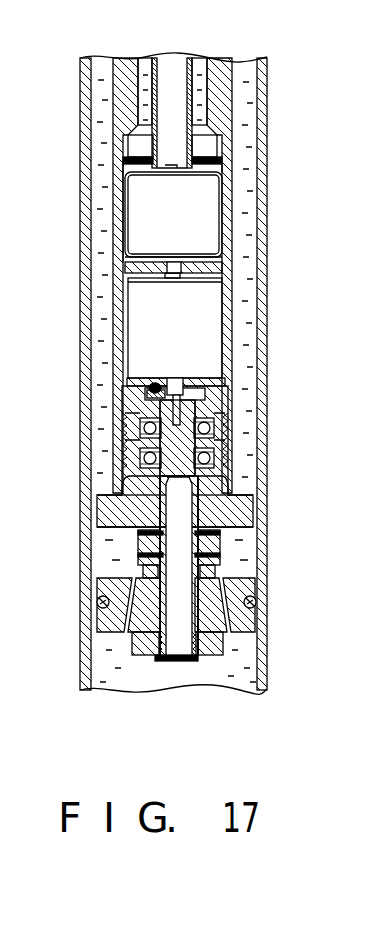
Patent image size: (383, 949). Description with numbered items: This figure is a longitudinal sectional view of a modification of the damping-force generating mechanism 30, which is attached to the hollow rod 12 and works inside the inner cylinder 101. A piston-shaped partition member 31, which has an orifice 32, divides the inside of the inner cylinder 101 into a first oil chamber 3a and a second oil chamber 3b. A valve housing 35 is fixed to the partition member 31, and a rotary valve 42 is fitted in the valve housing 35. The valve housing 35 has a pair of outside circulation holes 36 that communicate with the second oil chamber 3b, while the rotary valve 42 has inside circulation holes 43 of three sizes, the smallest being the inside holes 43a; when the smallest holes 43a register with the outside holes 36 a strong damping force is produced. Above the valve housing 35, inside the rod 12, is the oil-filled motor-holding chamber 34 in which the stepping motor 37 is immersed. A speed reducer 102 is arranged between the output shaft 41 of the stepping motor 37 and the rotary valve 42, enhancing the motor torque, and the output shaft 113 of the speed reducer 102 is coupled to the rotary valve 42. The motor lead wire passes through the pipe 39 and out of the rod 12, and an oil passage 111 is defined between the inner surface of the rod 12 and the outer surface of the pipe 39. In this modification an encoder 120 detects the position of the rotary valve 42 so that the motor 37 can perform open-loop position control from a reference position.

The inner cylinder 101 is at (83, 345).
The damping-force generating mechanism 30 is at (117, 672).
The first oil chamber 3a is at (247, 682).
The rod 12 is at (230, 105).
The pipe 39 is at (197, 72).
The oil passage 111 is at (198, 88).
The stepping motor 37 is at (203, 212).
The motor-holding chamber 34 is at (127, 237).
The output shaft 41 is at (218, 268).
The speed reducer 102 is at (210, 313).
The second oil chamber 3b is at (252, 462).
The encoder 120 is at (203, 397).
The output shaft 113 is at (180, 375).
The smallest inside circulation holes 43a is at (162, 522).
The rotary valve 42 is at (193, 493).
The valve housing 35 is at (235, 515).
The inside circulation holes 43 is at (185, 575).
The outside circulation holes 36 is at (213, 558).
The partition member 31 is at (255, 623).
The orifice 32 is at (233, 632).